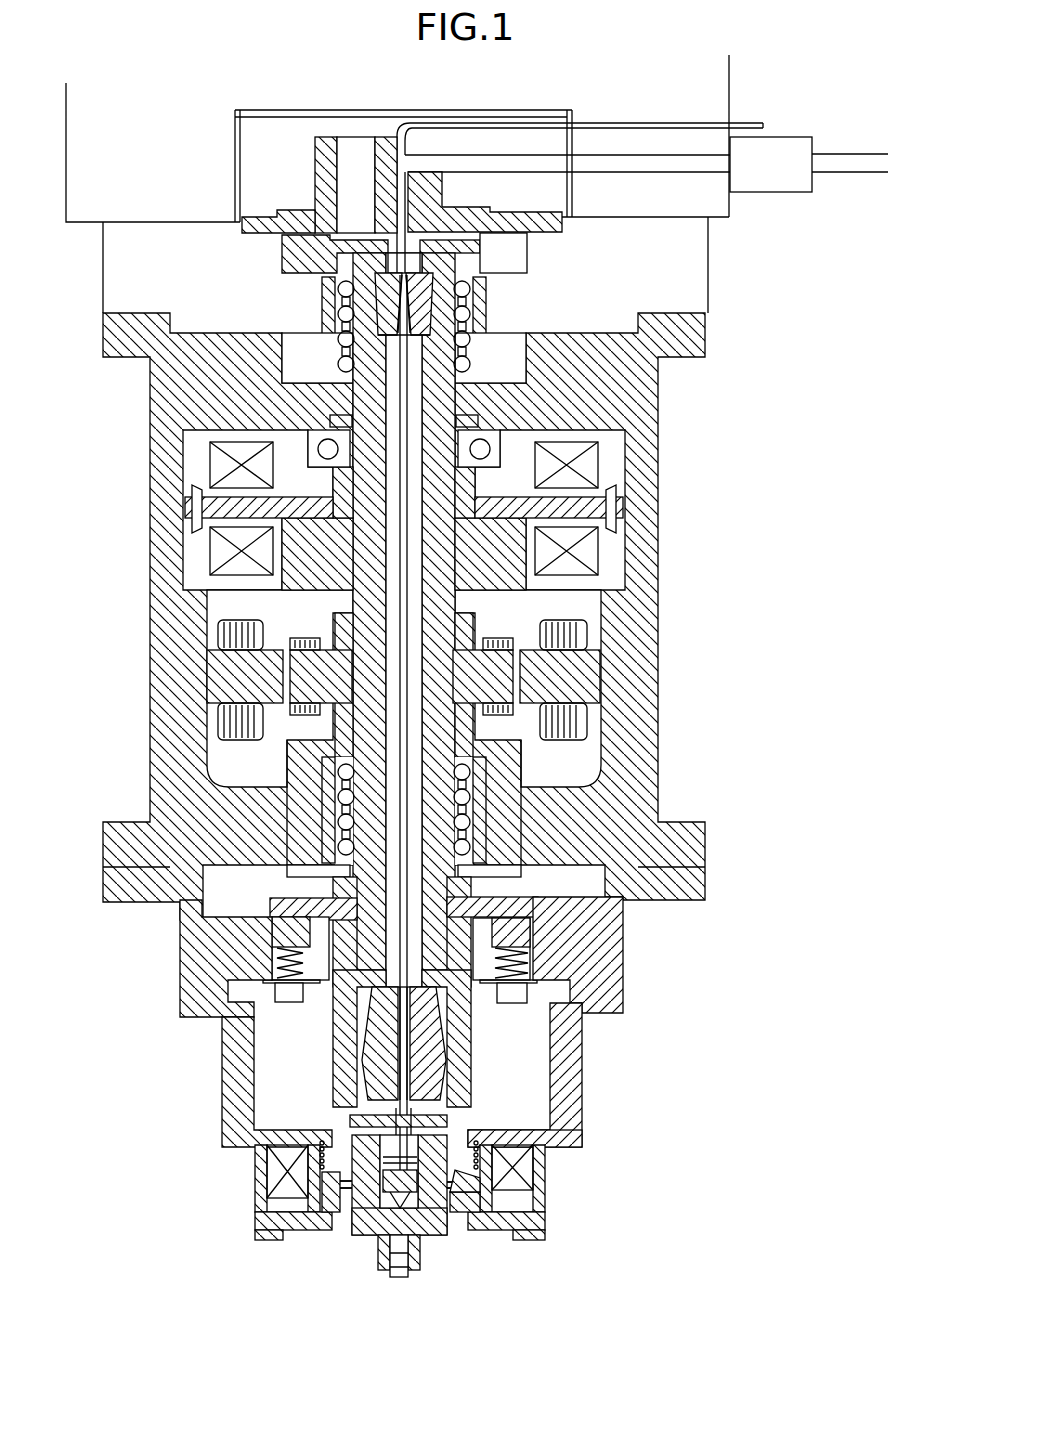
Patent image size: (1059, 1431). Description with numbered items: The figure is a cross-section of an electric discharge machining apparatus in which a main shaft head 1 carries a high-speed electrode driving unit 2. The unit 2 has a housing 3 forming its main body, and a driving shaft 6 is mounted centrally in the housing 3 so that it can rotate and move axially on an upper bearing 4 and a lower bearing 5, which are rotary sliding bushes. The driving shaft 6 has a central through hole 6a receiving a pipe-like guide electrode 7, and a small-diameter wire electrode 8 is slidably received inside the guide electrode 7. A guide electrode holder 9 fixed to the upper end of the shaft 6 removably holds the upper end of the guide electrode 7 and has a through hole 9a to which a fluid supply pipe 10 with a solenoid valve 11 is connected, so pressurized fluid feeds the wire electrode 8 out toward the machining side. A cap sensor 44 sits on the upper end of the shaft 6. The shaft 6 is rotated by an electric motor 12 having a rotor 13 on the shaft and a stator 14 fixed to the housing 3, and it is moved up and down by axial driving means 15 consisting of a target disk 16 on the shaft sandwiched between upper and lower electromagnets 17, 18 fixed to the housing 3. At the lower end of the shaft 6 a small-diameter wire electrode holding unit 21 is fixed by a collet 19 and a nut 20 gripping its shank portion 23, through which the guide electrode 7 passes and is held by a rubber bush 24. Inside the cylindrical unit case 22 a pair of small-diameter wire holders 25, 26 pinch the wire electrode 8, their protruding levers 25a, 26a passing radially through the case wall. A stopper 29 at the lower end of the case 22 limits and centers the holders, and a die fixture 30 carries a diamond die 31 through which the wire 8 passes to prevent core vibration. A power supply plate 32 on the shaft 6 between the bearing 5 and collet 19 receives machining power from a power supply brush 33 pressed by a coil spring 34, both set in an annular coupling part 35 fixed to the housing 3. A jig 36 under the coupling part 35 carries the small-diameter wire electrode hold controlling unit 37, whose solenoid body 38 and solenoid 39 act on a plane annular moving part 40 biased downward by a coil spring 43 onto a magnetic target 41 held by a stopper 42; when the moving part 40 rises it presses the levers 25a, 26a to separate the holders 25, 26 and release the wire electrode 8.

The main shaft head 1 is at (733, 68).
The electrode driving unit 2 is at (384, 616).
The housing 3 is at (160, 568).
The upper bearing 4 is at (373, 213).
The lower bearing 5 is at (330, 812).
The driving shaft 6 is at (413, 620).
The central through hole 6a is at (415, 410).
The guide electrode 7 is at (400, 502).
The small-diameter wire electrode 8 is at (405, 590).
The guide electrode holder 9 is at (385, 283).
The through hole 9a is at (410, 298).
The fluid supply pipe 10 is at (705, 176).
The solenoid valve 11 is at (785, 142).
The electric motor 12 is at (504, 680).
The rotor 13 is at (497, 667).
The stator 14 is at (580, 690).
The axial driving means 15 is at (493, 502).
The target disk 16 is at (525, 510).
The upper electromagnet 17 is at (510, 478).
The lower electromagnet 18 is at (510, 545).
The collet 19 is at (580, 1128).
The nut 20 is at (563, 1089).
The small-diameter wire electrode holding unit 21 is at (540, 1237).
The unit case 22 is at (328, 1162).
The shank portion 23 is at (335, 1085).
The rubber bush 24 is at (348, 1128).
The small-diameter wire holder 25 is at (355, 1206).
The protruding lever 25a is at (482, 1194).
The small-diameter wire holder 26 is at (428, 1236).
The protruding lever 26a is at (327, 1215).
The stopper 29 is at (378, 1237).
The die fixture 30 is at (432, 1236).
The diamond die 31 is at (396, 1272).
The power supply plate 32 is at (532, 905).
The power supply brush 33 is at (525, 962).
The coil spring 34 is at (595, 1018).
The coupling part 35 is at (176, 965).
The jig 36 is at (218, 1046).
The small-diameter wire electrode hold controlling unit 37 is at (251, 1231).
The solenoid body 38 is at (290, 1186).
The solenoid 39 is at (265, 1222).
The moving part 40 is at (462, 1214).
The target 41 is at (502, 1232).
The stopper 42 is at (525, 1242).
The coil spring 43 is at (540, 1167).
The cap sensor 44 is at (355, 150).